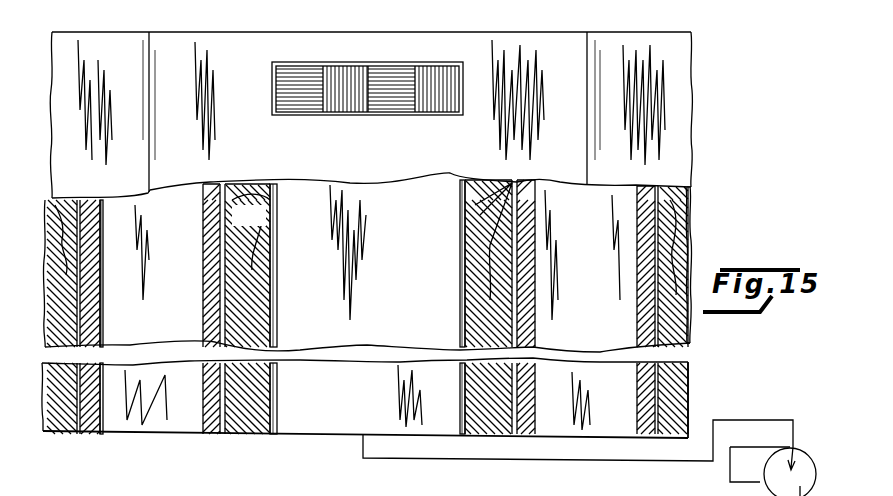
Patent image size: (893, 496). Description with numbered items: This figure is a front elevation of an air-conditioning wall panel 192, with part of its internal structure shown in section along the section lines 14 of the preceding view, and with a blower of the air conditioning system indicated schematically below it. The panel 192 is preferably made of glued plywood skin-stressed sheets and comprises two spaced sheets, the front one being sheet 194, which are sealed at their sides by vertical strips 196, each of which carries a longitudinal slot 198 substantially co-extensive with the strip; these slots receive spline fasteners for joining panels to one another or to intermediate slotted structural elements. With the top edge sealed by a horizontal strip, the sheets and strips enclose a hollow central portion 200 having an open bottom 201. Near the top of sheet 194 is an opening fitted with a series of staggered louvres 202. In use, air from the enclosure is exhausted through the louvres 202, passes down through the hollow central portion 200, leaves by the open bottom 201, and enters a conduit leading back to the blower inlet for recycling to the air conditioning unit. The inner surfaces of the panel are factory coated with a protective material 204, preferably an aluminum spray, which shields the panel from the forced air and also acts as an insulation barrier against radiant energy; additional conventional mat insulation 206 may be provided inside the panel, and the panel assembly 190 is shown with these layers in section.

The section line 14- 14 is at (53, 80).
The upper block 190 is at (371, 99).
The panel 192 is at (566, 51).
The sheet 194 is at (203, 42).
The vertical strips 196 is at (470, 217).
The longitudinal slot 198 is at (225, 237).
The hollow central portion 200 is at (382, 287).
The open bottom 201 is at (325, 418).
The staggered louvres 202 is at (388, 63).
The protective material 204 is at (278, 221).
The mat insulation 206 is at (400, 197).